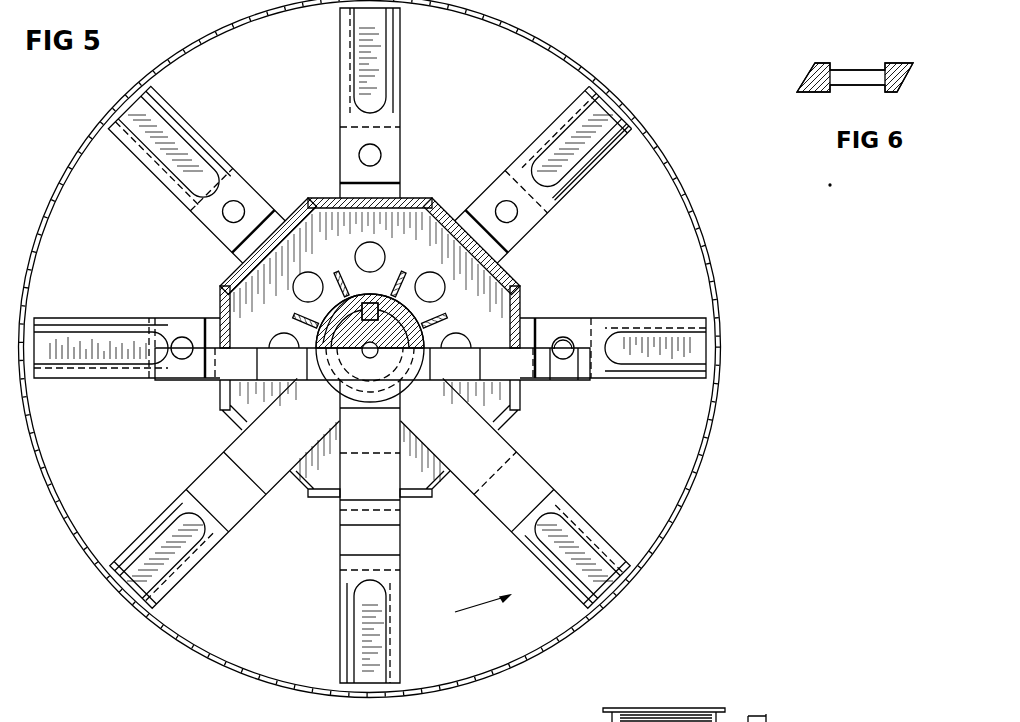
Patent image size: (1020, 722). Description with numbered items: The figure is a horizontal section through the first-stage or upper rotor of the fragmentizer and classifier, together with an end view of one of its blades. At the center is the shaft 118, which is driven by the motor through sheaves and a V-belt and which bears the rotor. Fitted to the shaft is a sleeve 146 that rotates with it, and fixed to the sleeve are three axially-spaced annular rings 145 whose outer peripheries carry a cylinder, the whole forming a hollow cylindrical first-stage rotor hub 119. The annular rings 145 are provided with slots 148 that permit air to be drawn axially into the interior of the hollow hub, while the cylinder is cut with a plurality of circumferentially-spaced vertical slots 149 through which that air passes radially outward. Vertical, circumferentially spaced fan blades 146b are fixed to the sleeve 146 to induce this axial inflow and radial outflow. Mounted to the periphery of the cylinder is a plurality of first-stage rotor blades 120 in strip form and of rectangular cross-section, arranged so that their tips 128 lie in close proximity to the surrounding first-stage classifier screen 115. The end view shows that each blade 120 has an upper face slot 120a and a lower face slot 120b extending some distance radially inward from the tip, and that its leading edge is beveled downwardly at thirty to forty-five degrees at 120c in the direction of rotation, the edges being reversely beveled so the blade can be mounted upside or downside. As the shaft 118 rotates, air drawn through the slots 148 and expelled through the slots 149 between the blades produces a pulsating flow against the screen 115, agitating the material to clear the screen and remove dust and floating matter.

In FIG. 5, the first-stage classifier screen 115 is at (652, 140).
In FIG. 5, the shaft 118 is at (352, 342).
In FIG. 5, the first-stage rotor hub 119 is at (413, 497).
In FIG. 5, the first-stage rotor blades 120 is at (535, 138).
In FIG. 6, the first-stage rotor blades 120 is at (815, 95).
In FIG. 5, the upper face slot 120a is at (567, 160).
In FIG. 6, the upper face slot 120a is at (840, 70).
In FIG. 6, the lower face slot 120b is at (838, 86).
In FIG. 5, the beveled leading edge 120c is at (568, 183).
In FIG. 6, the beveled leading edge 120c is at (815, 68).
In FIG. 5, the blade tips 128 is at (603, 103).
In FIG. 5, the annular rings 145 is at (478, 290).
In FIG. 5, the sleeve 146 is at (333, 337).
In FIG. 5, the fan blades 146b is at (397, 276).
In FIG. 5, the slots 148 is at (356, 258).
In FIG. 5, the vertical slots 149 is at (412, 200).